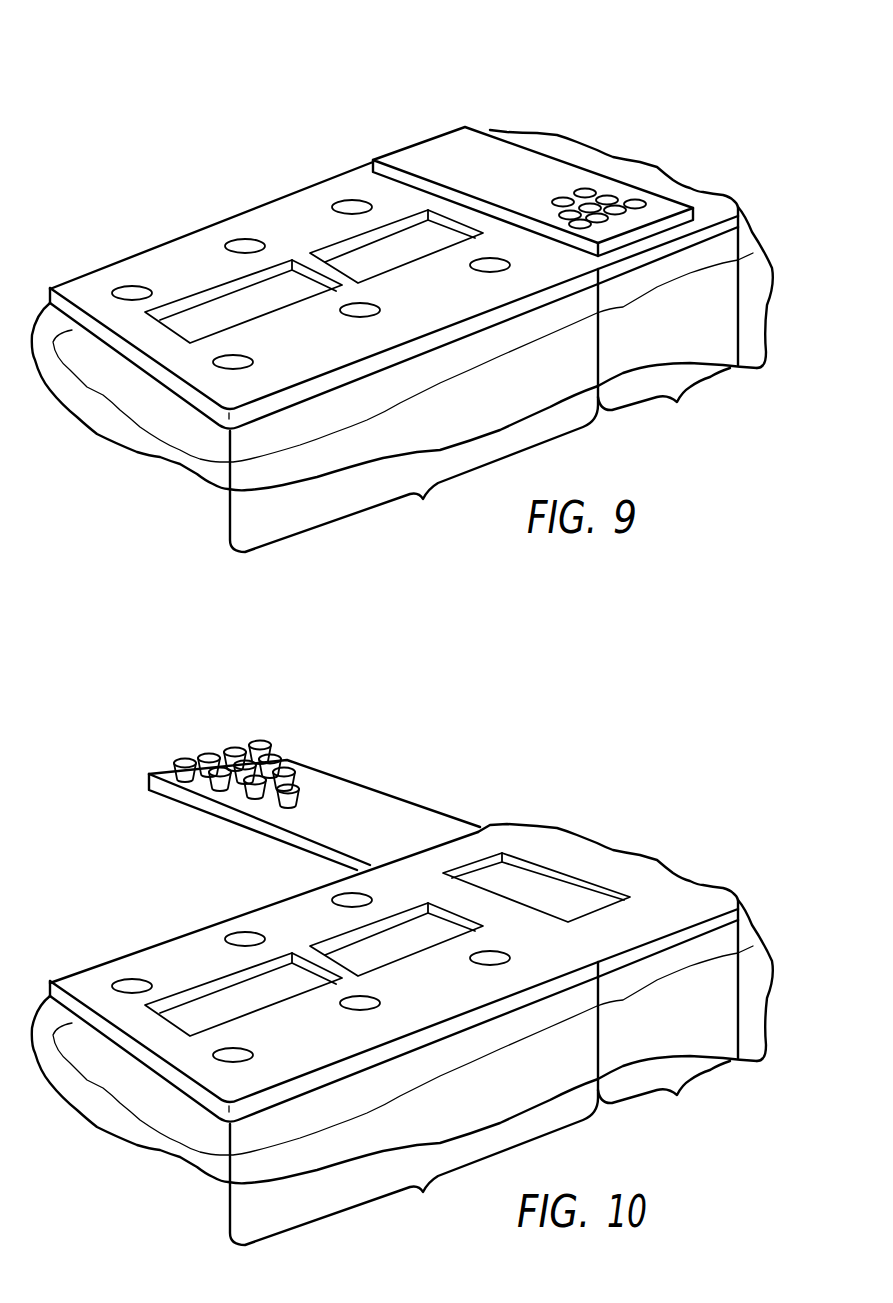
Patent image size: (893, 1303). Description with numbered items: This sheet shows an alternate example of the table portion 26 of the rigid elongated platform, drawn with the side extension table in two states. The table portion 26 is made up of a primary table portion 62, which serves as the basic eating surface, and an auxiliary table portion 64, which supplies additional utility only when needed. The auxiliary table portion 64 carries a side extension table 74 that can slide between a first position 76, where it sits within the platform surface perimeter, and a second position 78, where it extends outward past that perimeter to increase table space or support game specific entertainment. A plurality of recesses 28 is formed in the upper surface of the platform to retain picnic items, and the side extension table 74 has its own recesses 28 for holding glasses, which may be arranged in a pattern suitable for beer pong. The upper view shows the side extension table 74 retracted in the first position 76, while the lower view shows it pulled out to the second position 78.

In FIG. 9, the table portion 26 is at (47, 286).
In FIG. 9, the recesses 28 is at (332, 207).
In FIG. 9, the primary table portion 62 is at (394, 402).
In FIG. 10, the primary table portion 62 is at (394, 1095).
In FIG. 9, the auxiliary table portion 64 is at (631, 284).
In FIG. 10, the auxiliary table portion 64 is at (625, 978).
In FIG. 9, the side extension table 74 is at (533, 173).
In FIG. 10, the side extension table 74 is at (360, 832).
In FIG. 9, the first position 76 is at (615, 174).
In FIG. 10, the second position 78 is at (314, 812).